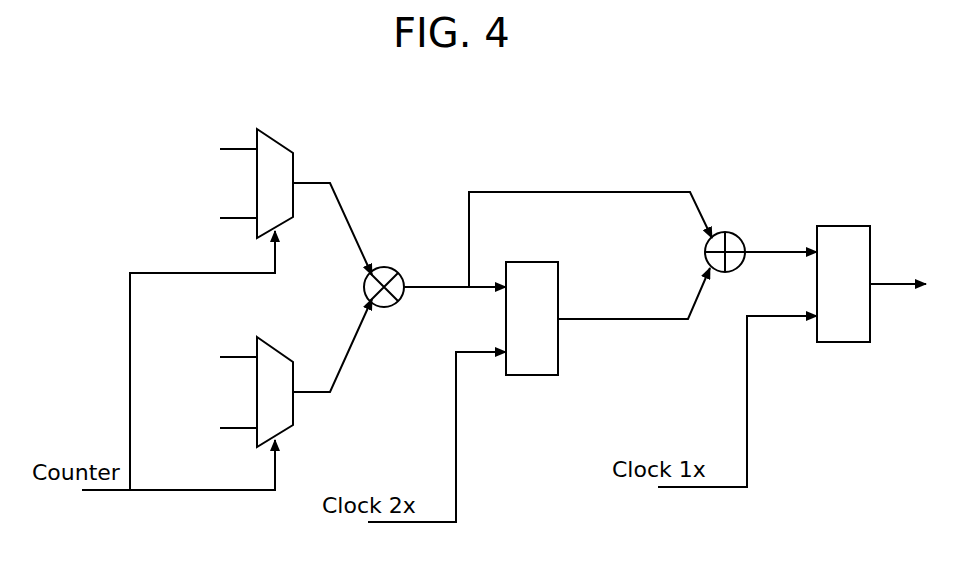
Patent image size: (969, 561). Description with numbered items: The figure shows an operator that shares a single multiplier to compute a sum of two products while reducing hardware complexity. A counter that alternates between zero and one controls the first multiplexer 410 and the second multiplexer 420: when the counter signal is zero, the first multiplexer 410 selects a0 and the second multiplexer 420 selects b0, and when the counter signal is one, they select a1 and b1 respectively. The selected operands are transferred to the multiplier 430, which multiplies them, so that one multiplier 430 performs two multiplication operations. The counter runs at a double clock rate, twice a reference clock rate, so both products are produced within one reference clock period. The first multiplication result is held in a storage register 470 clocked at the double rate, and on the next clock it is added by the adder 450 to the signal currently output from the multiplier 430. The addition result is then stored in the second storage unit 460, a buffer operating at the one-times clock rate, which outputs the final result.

The first multiplexer 410 is at (281, 145).
The second multiplexer 420 is at (281, 353).
The multiplier 430 is at (398, 272).
The adder 450 is at (738, 238).
The second storage unit 460 is at (848, 226).
The intermediate D flip-flop register 470 is at (537, 262).